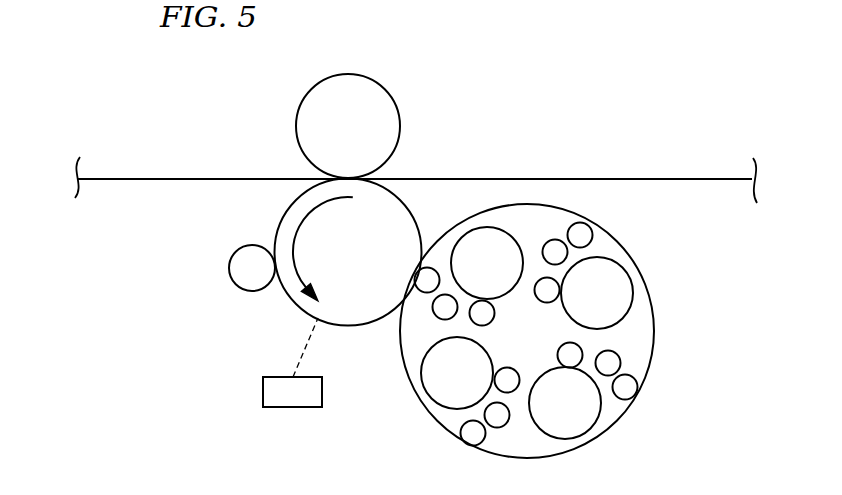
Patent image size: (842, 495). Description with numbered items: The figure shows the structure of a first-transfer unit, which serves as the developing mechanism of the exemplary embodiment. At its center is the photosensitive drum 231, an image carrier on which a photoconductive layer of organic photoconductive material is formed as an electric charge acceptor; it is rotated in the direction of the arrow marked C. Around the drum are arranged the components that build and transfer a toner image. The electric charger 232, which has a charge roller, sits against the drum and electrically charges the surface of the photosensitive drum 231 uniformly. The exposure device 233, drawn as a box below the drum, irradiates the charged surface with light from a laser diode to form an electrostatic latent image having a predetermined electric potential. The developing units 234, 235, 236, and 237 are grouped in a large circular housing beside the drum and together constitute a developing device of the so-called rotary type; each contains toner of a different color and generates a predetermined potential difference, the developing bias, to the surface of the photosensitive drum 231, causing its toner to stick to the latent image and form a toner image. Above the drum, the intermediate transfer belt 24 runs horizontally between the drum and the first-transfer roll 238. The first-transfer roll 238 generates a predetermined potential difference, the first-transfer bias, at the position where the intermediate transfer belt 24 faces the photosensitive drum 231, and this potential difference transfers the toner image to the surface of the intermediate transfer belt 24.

The intermediate transfer belt 24 is at (668, 179).
The first-transfer roll 238 is at (383, 100).
The photosensitive drum 231 is at (283, 220).
The electric charger 232 is at (230, 272).
The exposure device 233 is at (285, 397).
The developing unit 234 is at (506, 275).
The developing unit 235 is at (476, 385).
The developing unit 236 is at (584, 415).
The developing unit 237 is at (615, 305).